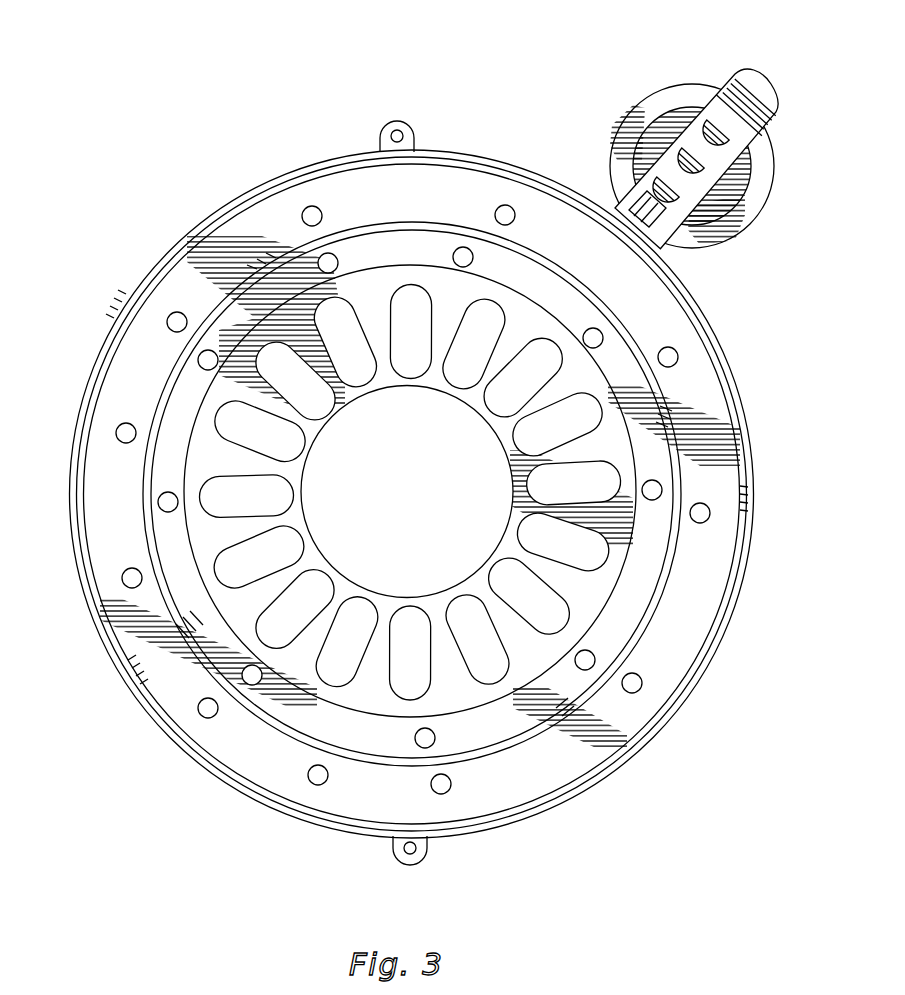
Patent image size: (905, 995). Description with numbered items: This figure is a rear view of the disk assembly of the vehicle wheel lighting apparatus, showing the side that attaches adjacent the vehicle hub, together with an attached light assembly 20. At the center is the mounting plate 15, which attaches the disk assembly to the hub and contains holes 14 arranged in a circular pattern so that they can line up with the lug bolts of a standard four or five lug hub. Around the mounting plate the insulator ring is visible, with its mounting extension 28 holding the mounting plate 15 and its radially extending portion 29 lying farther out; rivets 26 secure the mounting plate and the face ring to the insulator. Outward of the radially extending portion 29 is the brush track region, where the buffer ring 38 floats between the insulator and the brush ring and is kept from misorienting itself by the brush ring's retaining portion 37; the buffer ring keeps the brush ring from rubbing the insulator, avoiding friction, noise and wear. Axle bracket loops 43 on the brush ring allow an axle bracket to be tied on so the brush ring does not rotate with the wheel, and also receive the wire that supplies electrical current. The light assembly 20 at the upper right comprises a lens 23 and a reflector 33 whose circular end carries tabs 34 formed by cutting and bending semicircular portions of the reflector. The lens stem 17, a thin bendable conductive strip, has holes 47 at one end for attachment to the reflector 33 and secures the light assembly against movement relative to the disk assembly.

The holes 14 is at (526, 607).
The mounting plate 15 is at (481, 588).
The lens stem 17 is at (699, 196).
The light assembly 20 is at (720, 144).
The lens 23 is at (697, 242).
The rivets 26 is at (158, 501).
The mounting extension 28 is at (492, 733).
The radially extending portion 29 is at (697, 606).
The reflector 33 is at (748, 181).
The tabs 34 is at (750, 158).
The retaining portion 37 is at (738, 387).
The buffer ring 38 is at (736, 428).
The axle bracket loops 43 is at (426, 852).
The holes 47 is at (772, 110).